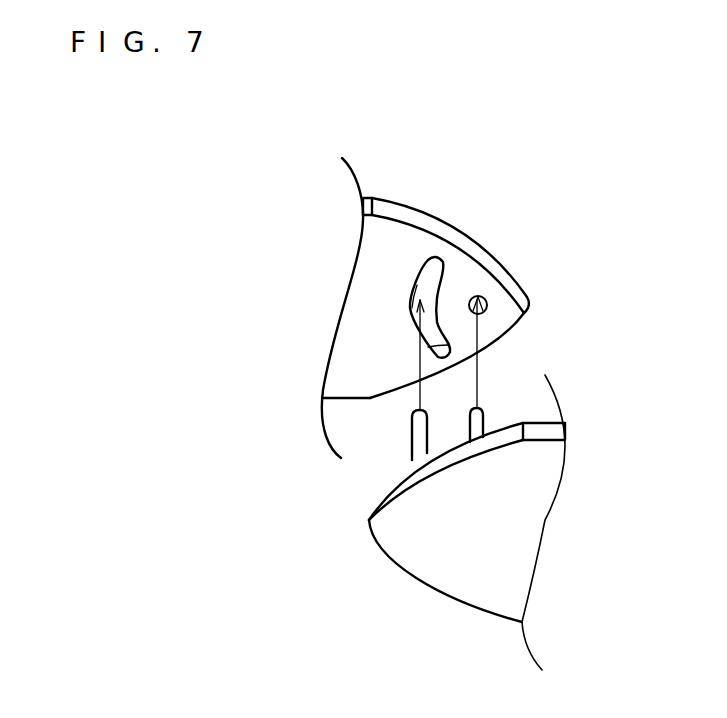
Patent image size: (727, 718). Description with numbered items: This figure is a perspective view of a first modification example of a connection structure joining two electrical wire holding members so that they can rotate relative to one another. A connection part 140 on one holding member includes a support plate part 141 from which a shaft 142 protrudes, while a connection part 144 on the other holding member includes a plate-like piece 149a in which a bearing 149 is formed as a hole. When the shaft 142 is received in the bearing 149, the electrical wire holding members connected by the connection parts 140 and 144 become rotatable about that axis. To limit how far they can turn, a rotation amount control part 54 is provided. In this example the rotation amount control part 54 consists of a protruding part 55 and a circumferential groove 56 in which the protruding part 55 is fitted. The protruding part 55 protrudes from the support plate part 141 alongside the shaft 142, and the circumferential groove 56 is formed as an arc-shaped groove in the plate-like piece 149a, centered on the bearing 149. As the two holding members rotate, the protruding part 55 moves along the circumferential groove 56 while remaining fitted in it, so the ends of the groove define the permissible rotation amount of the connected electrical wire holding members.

The rotation amount control part 54 is at (338, 462).
The protruding part 55 is at (412, 445).
The circumferential groove 56 is at (410, 312).
The connection part 140 is at (420, 587).
The support plate part 141 is at (461, 598).
The shaft 142 is at (485, 422).
The connection part 144 is at (452, 225).
The bearing 149 is at (487, 313).
The plate-like piece 149a is at (490, 250).